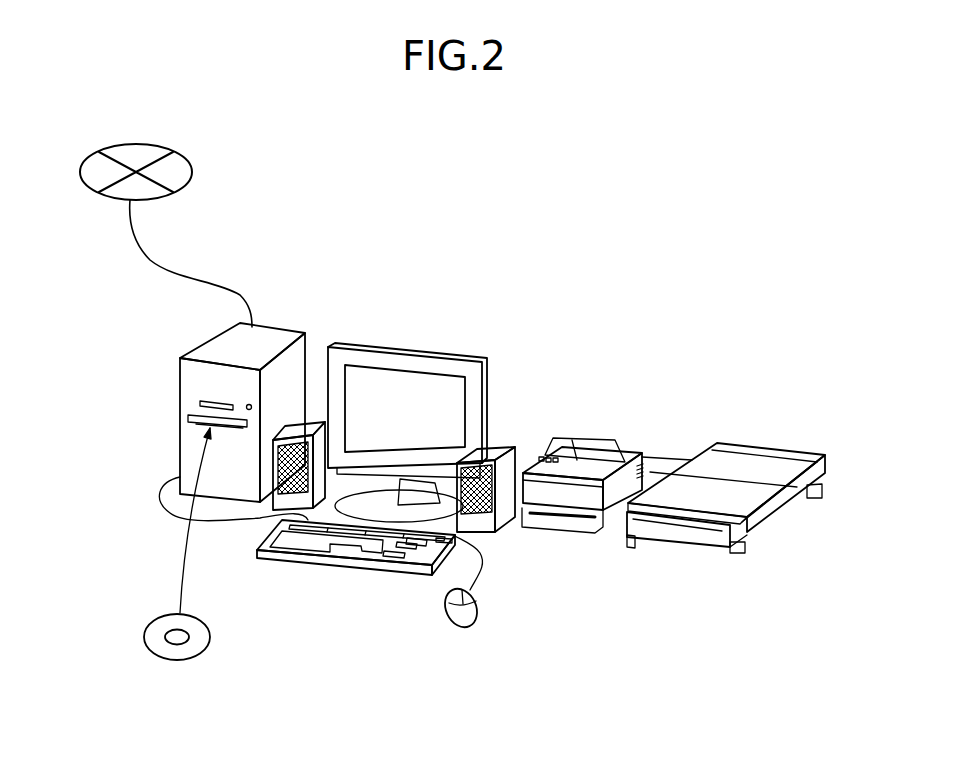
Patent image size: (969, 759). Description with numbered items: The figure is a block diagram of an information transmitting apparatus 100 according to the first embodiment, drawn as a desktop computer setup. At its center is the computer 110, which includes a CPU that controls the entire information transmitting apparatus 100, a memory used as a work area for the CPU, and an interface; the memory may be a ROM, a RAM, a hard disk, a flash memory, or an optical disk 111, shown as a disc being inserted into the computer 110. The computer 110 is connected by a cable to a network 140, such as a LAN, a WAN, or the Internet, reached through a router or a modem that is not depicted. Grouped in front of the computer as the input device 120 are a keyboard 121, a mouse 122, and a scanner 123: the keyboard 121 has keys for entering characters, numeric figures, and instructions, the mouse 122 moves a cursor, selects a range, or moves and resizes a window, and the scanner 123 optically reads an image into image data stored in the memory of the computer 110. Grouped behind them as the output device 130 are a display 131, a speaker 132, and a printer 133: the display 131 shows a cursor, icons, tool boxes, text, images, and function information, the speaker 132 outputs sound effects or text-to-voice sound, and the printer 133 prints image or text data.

The information transmitting apparatus 100 is at (651, 176).
The computer 110 is at (269, 330).
The optical disk 111 is at (201, 617).
The input device 120 is at (575, 673).
The keyboard 121 is at (383, 575).
The mouse 122 is at (460, 628).
The scanner 123 is at (653, 548).
The output device 130 is at (632, 312).
The display 131 is at (458, 355).
The speaker 132 is at (508, 447).
The printer 133 is at (603, 437).
The network 140 is at (148, 144).